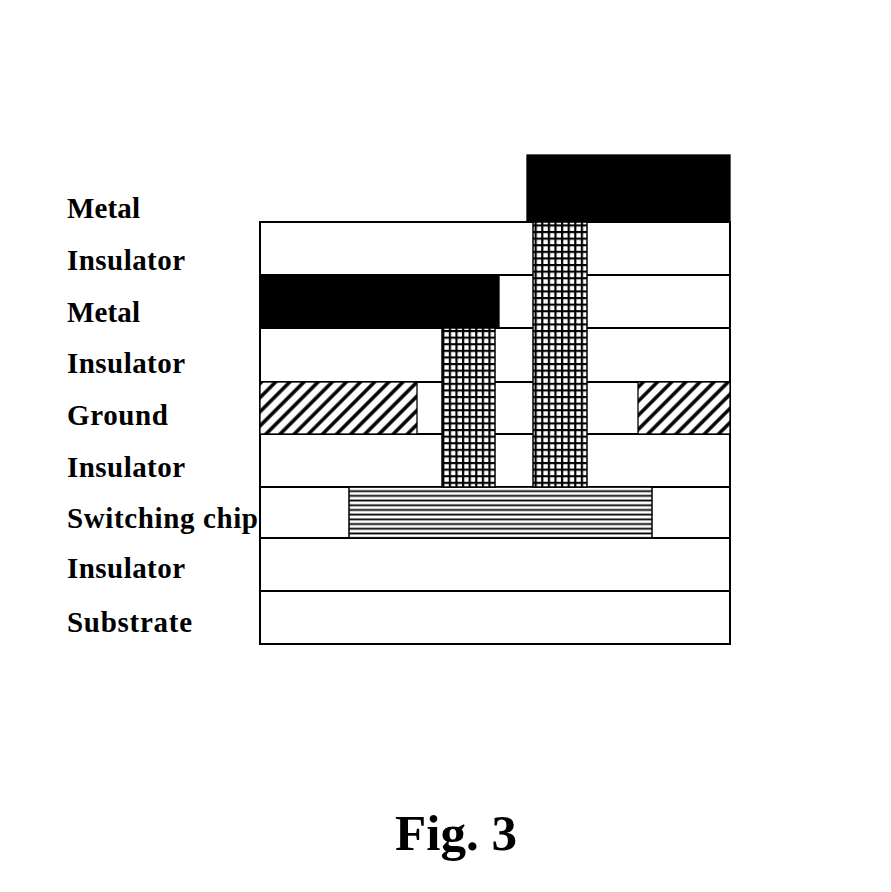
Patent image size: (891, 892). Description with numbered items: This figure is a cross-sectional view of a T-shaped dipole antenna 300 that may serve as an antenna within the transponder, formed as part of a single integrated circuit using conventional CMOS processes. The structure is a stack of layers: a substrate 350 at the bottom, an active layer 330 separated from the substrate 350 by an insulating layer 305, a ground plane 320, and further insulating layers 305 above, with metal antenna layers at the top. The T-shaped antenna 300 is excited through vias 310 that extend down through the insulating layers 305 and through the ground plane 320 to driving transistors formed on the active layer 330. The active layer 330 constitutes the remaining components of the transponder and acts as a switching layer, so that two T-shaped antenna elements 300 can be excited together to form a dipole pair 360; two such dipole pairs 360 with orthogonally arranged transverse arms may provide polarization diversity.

The T-shaped dipole antenna 300 is at (260, 300).
The insulating layers 305 is at (730, 252).
The vias 310 is at (588, 316).
The ground plane 320 is at (730, 408).
The active layer 330 is at (652, 515).
The substrate 350 is at (495, 645).
The dipole pair 360 is at (371, 264).